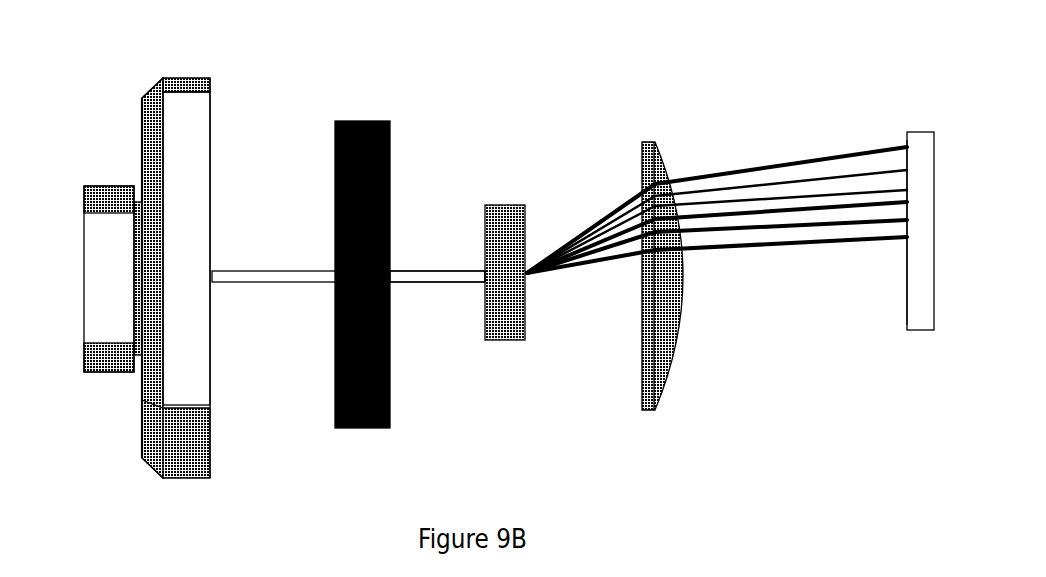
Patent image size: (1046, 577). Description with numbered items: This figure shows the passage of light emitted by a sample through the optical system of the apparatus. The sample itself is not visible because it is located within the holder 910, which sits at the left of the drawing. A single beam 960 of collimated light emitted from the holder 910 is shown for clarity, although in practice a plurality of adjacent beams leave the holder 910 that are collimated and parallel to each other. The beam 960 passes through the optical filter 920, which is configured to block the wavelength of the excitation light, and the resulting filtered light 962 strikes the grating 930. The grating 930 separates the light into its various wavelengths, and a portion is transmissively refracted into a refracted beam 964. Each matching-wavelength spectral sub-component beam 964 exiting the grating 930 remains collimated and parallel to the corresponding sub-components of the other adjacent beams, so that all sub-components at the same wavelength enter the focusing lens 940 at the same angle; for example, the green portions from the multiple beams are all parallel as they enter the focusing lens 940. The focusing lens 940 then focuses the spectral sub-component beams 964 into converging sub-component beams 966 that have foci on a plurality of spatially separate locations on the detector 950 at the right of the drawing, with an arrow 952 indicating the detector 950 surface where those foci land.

The holder 910 is at (191, 98).
The optical filter 920 is at (366, 125).
The grating 930 is at (511, 213).
The focusing lens 940 is at (648, 143).
The detector 950 is at (922, 137).
The detector surface 952 is at (903, 277).
The beam 960 is at (298, 272).
The filtered light 962 is at (462, 273).
The refracted beam 964 is at (606, 192).
The converging sub-component beams 966 is at (795, 150).